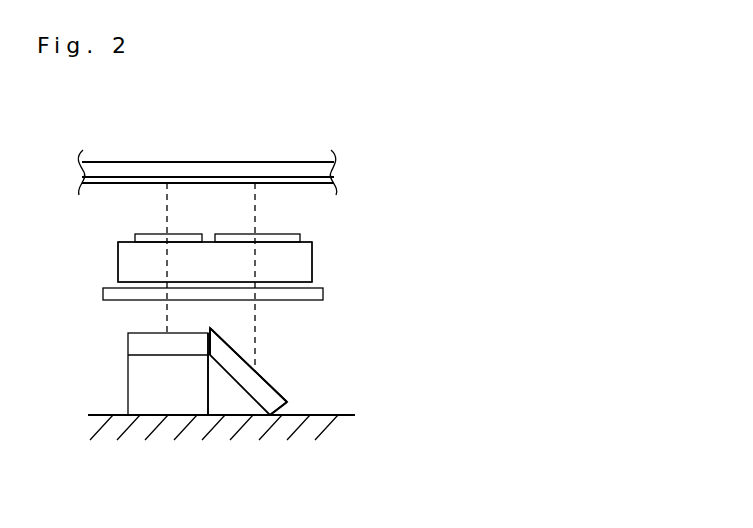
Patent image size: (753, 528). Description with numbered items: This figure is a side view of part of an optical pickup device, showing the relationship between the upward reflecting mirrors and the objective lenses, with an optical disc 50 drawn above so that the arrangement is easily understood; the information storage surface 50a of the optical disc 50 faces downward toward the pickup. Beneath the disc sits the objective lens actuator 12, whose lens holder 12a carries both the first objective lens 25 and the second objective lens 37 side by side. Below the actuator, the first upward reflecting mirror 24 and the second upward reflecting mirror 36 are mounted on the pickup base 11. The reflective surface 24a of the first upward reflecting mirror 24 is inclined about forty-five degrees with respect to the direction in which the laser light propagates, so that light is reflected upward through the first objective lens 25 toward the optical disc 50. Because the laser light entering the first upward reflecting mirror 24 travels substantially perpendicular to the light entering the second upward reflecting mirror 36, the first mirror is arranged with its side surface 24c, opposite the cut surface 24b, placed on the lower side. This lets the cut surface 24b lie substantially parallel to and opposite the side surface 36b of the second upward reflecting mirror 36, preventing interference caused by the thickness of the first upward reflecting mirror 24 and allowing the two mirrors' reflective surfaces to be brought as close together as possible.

The pickup base 11 is at (345, 432).
The objective lens actuator 12 is at (388, 235).
The lens holder 12a is at (312, 267).
The first upward reflecting mirror 24 is at (253, 416).
The reflective surface 24a is at (262, 373).
The cut surface 24b is at (234, 330).
The side surface 24c is at (287, 406).
The first objective lens 25 is at (283, 233).
The second upward reflecting mirror 36 is at (135, 380).
The side surface 36b is at (208, 378).
The second objective lens 37 is at (143, 233).
The optical disc 50 is at (180, 162).
The information storage surface 50a is at (288, 177).